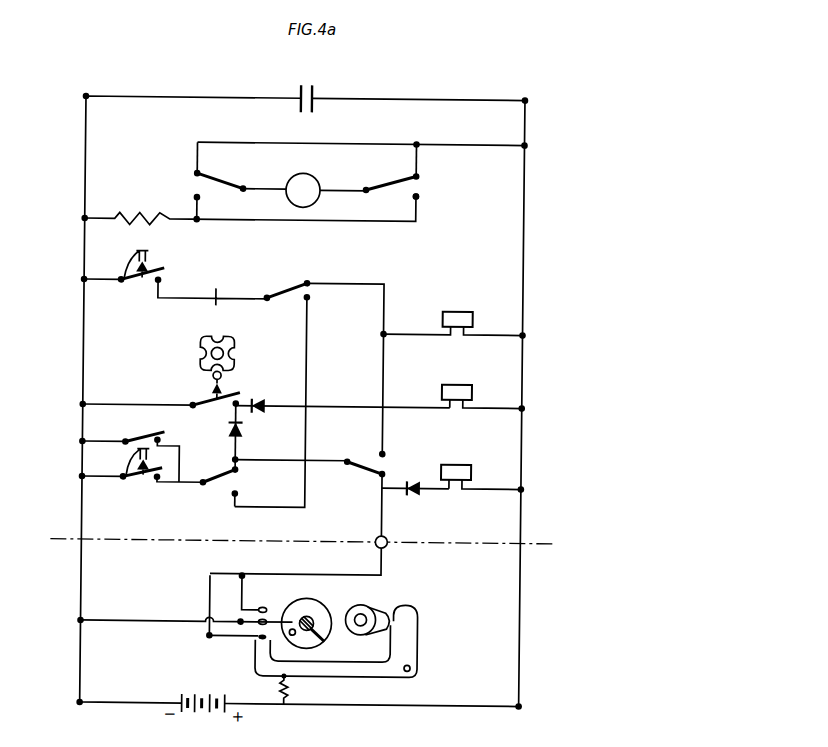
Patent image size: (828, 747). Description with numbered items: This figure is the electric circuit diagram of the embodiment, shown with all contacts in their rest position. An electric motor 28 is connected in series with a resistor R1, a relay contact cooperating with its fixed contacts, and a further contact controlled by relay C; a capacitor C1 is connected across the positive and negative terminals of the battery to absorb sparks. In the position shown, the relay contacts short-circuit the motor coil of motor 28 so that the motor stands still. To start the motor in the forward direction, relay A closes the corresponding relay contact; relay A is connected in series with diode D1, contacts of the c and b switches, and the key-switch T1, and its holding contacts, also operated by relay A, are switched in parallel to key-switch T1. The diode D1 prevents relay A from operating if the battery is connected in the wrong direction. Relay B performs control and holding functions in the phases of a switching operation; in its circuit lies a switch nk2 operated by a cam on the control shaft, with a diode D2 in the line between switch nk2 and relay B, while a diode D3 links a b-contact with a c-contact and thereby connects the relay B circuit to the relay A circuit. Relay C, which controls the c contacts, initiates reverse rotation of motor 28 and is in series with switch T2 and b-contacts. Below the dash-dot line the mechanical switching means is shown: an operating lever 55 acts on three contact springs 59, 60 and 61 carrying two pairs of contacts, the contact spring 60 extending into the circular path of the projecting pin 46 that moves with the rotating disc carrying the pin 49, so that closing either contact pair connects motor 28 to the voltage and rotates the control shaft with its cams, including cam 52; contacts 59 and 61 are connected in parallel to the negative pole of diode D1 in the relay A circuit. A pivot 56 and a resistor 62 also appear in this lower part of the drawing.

The capacitor C1 is at (313, 101).
The resistor R1 is at (250, 205).
The electric motor 28 is at (318, 181).
The key-switch T1 is at (143, 476).
The switch T2 is at (176, 279).
The switch nk2 is at (215, 377).
The diode D1 is at (412, 492).
The diode D2 is at (270, 402).
The diode D3 is at (247, 430).
The relay A is at (476, 471).
The relay B is at (476, 394).
The relay C is at (476, 322).
The projecting pin 46 is at (322, 612).
The pin 49 is at (331, 641).
The cam 52 is at (386, 629).
The operating lever 55 is at (424, 653).
The pivot 56 is at (417, 667).
The contact spring 59 is at (266, 607).
The contact spring 60 is at (262, 619).
The contact spring 61 is at (252, 641).
The resistor 62 is at (295, 686).